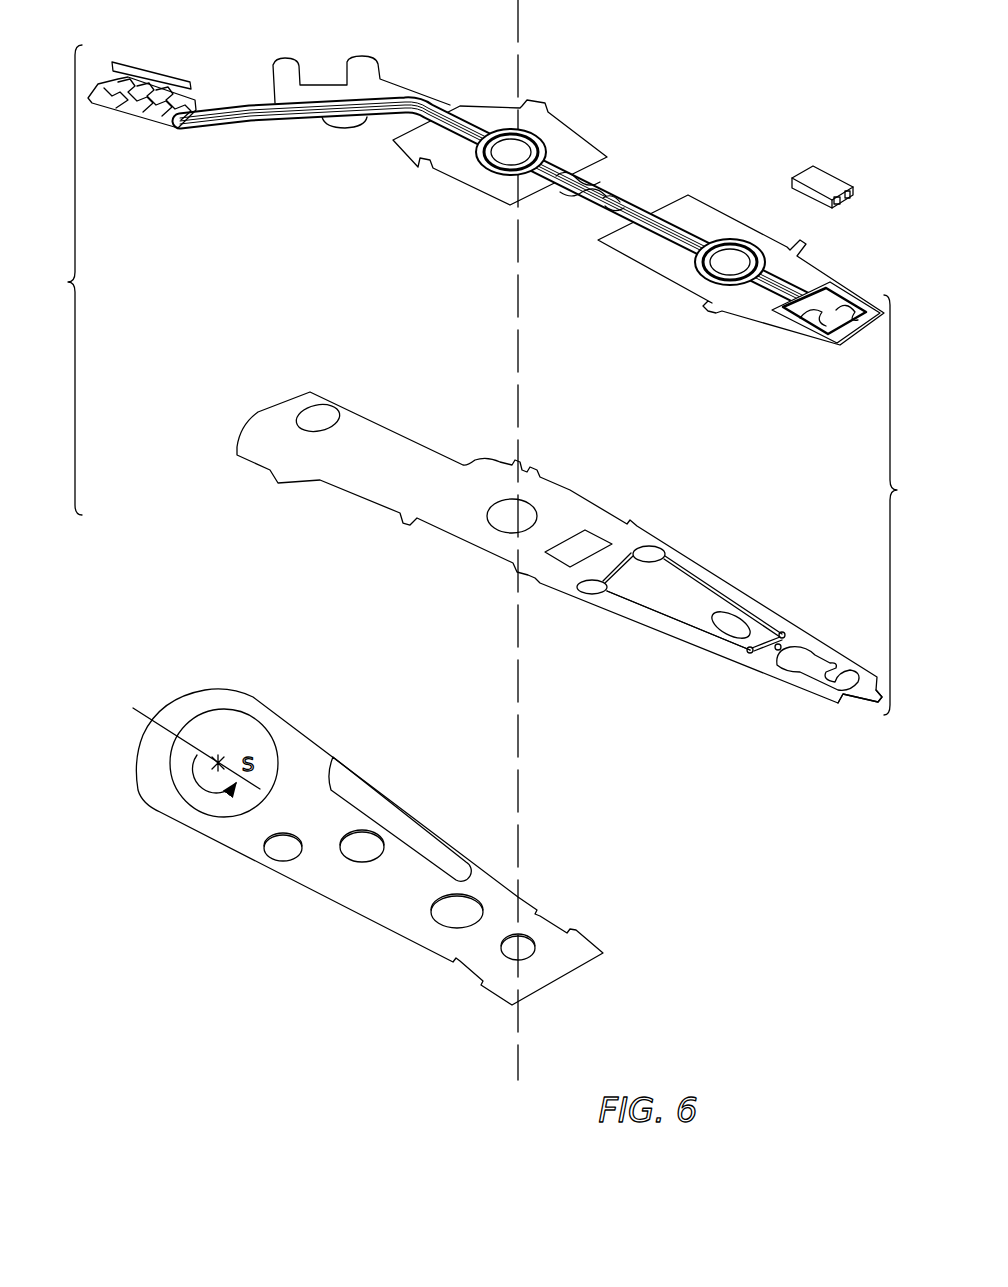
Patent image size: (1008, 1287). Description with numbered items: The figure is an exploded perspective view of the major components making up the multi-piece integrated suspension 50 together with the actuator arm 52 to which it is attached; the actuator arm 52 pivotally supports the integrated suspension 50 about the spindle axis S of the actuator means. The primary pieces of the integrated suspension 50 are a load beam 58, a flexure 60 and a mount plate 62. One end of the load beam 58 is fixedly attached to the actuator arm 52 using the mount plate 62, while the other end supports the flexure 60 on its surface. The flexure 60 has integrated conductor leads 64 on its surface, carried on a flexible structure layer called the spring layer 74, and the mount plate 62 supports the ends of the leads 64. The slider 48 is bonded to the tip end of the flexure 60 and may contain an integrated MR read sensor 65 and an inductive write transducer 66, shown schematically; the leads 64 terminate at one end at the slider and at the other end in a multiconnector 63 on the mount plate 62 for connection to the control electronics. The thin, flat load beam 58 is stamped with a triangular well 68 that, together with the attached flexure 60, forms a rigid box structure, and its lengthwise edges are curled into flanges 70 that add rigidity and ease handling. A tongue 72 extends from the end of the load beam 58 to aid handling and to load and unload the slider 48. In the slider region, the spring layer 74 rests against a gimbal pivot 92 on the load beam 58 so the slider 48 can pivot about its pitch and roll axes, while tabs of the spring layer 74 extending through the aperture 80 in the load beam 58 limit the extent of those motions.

The slider 48 is at (826, 159).
The integrated suspension 50 is at (485, 380).
The actuator arm 52 is at (355, 895).
The load beam 58 is at (666, 658).
The flexure 60 is at (484, 205).
The mount plate 62 is at (484, 105).
The multiconnector 63 is at (148, 75).
The conductor leads 64 is at (690, 233).
The integrated MR read sensor 65 is at (838, 205).
The inductive write transducer 66 is at (852, 197).
The triangular depression or well 68 is at (665, 582).
The flanges 70 is at (737, 663).
The tongue 72 is at (868, 708).
The spring layer 74 is at (650, 250).
The aperture 80 is at (803, 670).
The gimbal pivot 92 is at (783, 645).